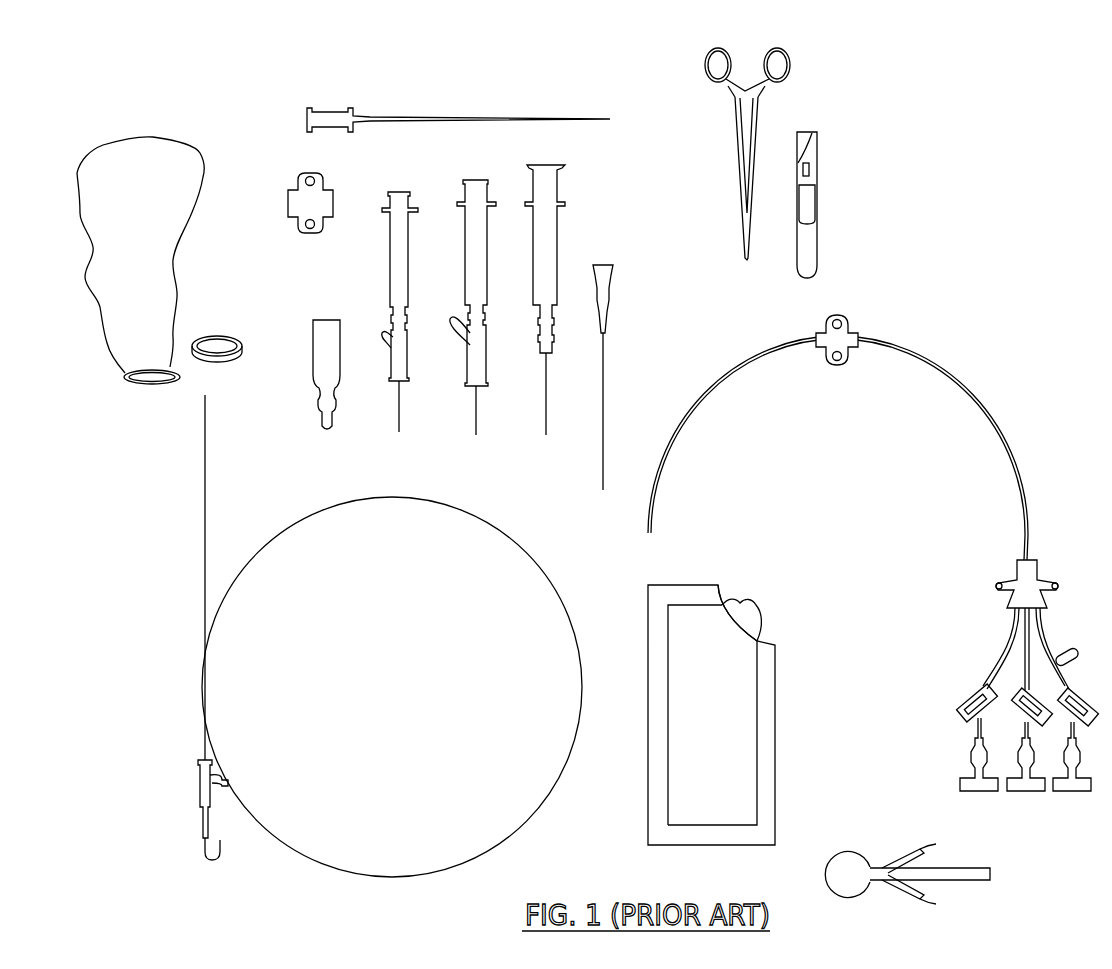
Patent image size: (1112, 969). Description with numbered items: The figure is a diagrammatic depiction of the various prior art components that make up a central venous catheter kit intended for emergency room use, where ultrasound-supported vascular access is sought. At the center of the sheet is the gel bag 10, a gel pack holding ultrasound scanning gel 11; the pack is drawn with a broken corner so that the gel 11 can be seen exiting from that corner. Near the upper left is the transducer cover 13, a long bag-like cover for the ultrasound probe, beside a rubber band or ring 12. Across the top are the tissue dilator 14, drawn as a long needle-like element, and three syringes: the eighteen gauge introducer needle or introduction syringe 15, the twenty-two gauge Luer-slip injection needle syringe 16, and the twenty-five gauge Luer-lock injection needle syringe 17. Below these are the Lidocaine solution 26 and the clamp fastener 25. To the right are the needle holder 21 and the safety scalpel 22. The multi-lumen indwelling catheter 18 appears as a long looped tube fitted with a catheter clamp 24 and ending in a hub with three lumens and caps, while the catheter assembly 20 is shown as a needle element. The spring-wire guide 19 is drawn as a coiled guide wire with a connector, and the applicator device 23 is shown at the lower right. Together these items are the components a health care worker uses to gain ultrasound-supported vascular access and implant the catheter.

The gel bag 10 is at (678, 587).
The gel 11 is at (746, 608).
The rubber band or ring 12 is at (229, 335).
The transducer cover 13 is at (120, 139).
The tissue dilator 14 is at (330, 107).
The introducer needle or introduction syringe 15 is at (547, 163).
The injection needle Luer-slip syringe 16 is at (477, 178).
The injection needle Luer-lock syringe 17 is at (398, 188).
The multi-lumen indwelling catheter 18 is at (1062, 628).
The spring-wire guide 19 is at (198, 772).
The catheter assembly 20 is at (603, 261).
The needle holder 21 is at (720, 47).
The safety scalpel 22 is at (808, 130).
The applicator device 23 is at (859, 851).
The catheter clamp 24 is at (850, 325).
The clamp fastener 25 is at (292, 188).
The Lidocaine solution 26 is at (323, 318).